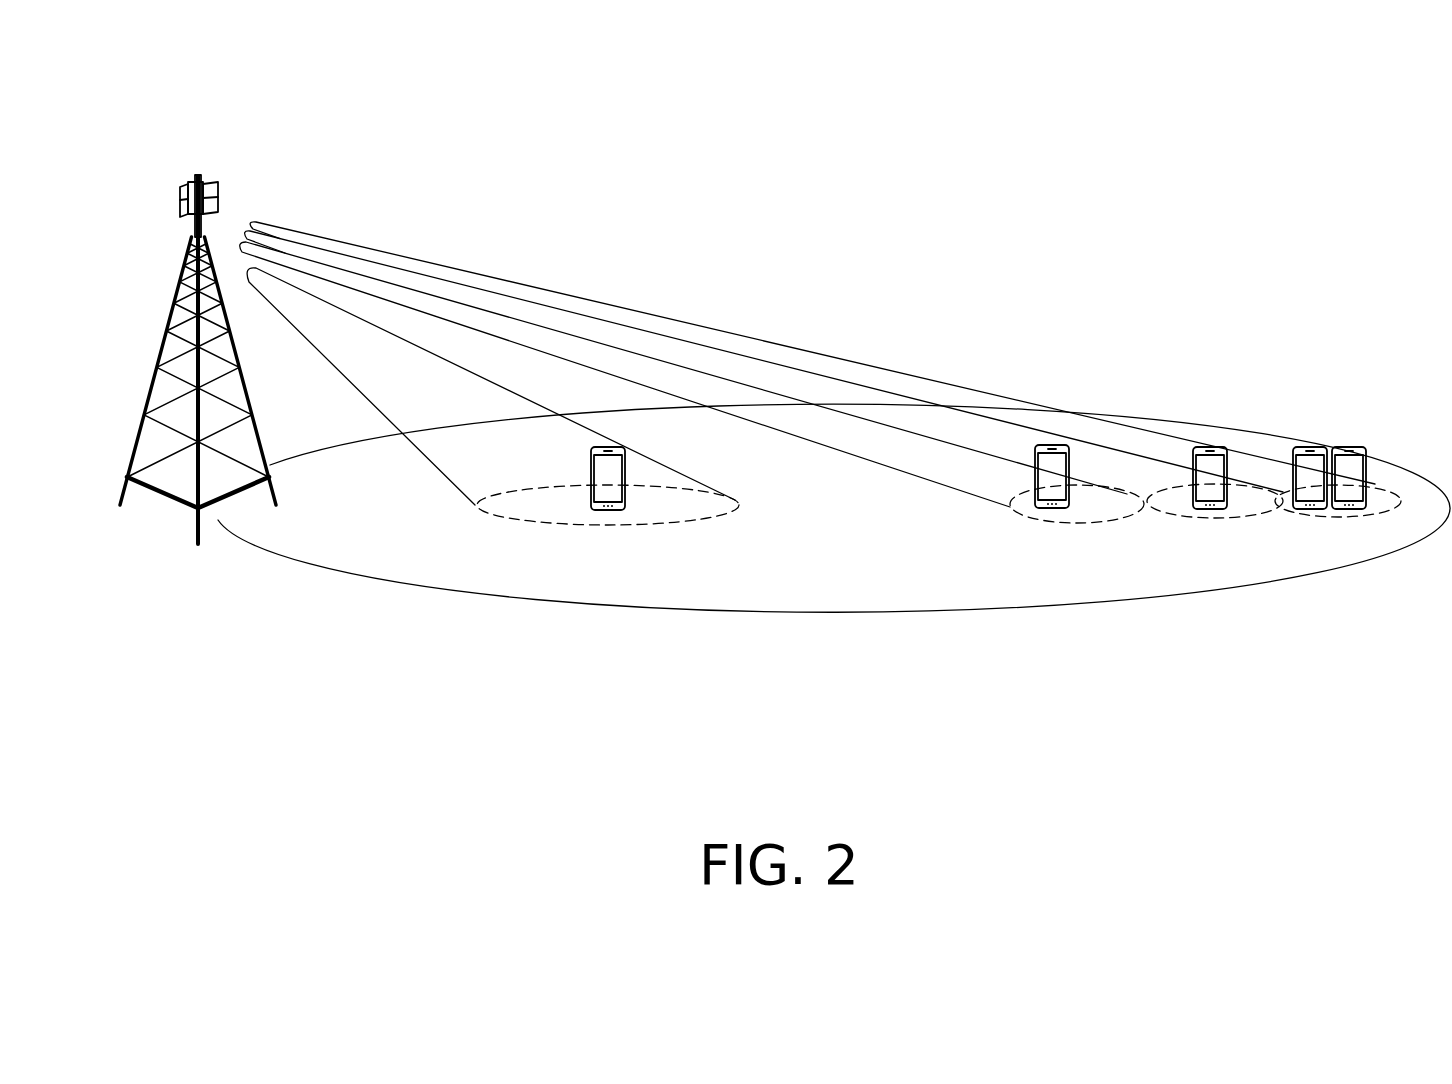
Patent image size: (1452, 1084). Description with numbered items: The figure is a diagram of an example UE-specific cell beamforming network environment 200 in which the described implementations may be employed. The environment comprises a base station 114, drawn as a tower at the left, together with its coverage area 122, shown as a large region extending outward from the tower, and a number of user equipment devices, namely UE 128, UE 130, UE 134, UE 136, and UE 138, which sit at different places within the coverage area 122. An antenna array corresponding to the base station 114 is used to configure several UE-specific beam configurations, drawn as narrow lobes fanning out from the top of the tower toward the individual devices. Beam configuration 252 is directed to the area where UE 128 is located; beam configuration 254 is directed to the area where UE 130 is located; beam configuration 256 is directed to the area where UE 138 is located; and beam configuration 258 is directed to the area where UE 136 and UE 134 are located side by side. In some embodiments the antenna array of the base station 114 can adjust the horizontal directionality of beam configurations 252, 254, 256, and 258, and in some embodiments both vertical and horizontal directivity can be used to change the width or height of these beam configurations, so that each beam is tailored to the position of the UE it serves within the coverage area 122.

The UE-specific cell beamforming network environment 200 is at (1106, 179).
The base station 114 is at (197, 546).
The coverage area 122 is at (399, 584).
The UE 128 is at (606, 512).
The UE 130 is at (1040, 511).
The UE 134 is at (1346, 511).
The UE 136 is at (1300, 511).
The UE 138 is at (1213, 511).
The beam configuration 252 is at (358, 388).
The beam configuration 254 is at (803, 431).
The beam configuration 256 is at (949, 398).
The beam configuration 258 is at (738, 334).